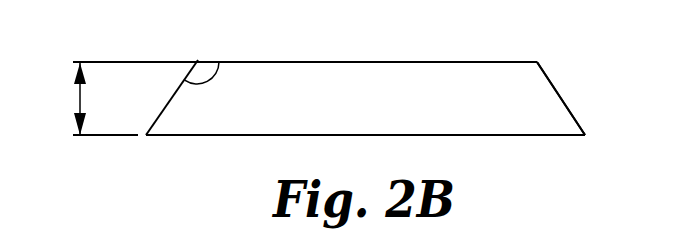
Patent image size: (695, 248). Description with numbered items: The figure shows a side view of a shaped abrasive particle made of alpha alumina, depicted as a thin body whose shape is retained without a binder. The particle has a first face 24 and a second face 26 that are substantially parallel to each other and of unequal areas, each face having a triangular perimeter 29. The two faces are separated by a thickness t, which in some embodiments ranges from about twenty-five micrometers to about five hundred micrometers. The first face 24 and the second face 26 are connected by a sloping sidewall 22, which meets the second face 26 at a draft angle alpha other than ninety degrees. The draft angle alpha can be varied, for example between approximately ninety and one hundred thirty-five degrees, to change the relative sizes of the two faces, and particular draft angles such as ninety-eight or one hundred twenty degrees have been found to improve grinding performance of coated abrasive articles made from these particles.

The sidewall 22 is at (175, 93).
The first face 24 is at (487, 135).
The second face 26 is at (400, 62).
The triangular perimeter 29 is at (537, 62).
The thickness t is at (77, 100).
The draft angle alpha is at (209, 80).